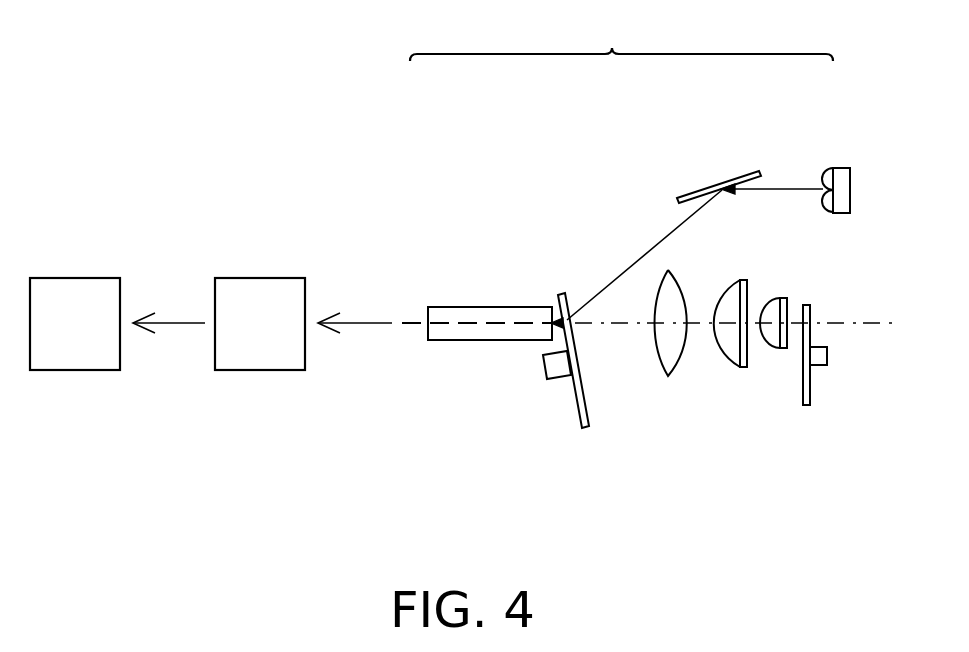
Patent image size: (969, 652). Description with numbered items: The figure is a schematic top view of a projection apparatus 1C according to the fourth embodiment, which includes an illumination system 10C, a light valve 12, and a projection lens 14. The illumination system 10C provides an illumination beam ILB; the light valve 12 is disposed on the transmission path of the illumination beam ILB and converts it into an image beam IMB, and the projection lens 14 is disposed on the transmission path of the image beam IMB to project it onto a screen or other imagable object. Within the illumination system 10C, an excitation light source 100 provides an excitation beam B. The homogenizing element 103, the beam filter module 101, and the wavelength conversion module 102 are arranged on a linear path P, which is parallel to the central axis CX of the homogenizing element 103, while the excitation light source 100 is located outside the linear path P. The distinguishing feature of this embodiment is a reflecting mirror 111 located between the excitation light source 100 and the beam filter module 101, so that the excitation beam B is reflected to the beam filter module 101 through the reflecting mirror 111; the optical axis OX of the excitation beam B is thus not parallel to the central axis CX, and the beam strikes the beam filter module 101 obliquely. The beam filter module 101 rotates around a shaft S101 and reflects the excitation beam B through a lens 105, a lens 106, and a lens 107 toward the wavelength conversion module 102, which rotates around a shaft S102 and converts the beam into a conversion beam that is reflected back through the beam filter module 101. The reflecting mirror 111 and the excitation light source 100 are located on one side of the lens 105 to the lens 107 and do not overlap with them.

The illumination system 10C is at (621, 36).
The excitation light source 100 is at (843, 172).
The reflecting mirror 111 is at (694, 191).
The excitation beam B is at (782, 189).
The optical axis OX is at (628, 264).
The homogenizing element 103 is at (488, 312).
The central axis CX is at (413, 320).
The beam filter module 101 is at (584, 426).
The shaft S101 is at (547, 364).
The lens 105 is at (675, 297).
The lens 106 is at (740, 290).
The lens 107 is at (782, 347).
The wavelength conversion module 102 is at (807, 410).
The shaft S102 is at (827, 357).
The linear path P is at (882, 320).
The projection lens 14 is at (89, 338).
The light valve 12 is at (274, 338).
The image beam IMB is at (180, 325).
The illumination beam ILB is at (365, 325).
The projection apparatus 1C is at (916, 528).